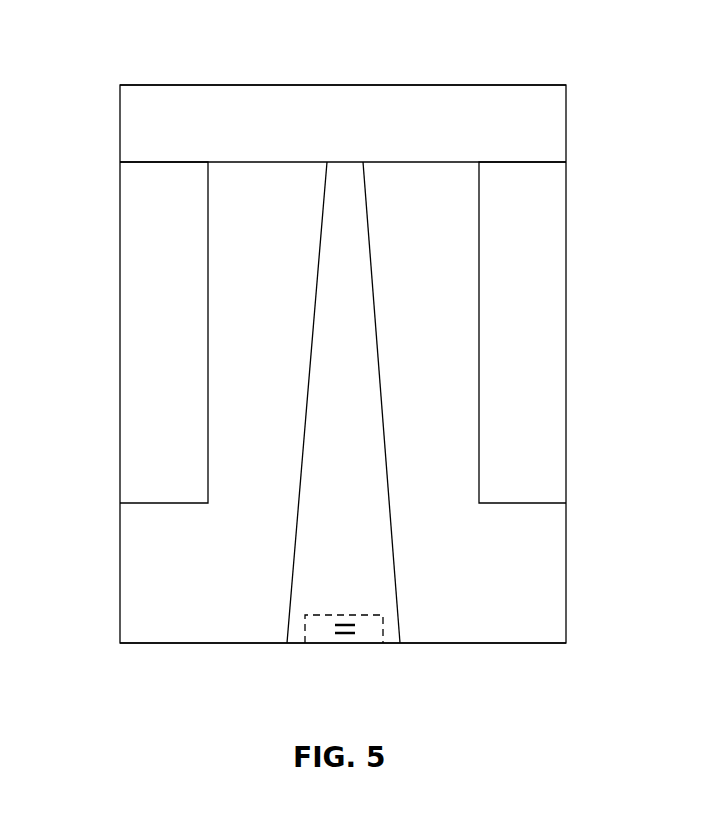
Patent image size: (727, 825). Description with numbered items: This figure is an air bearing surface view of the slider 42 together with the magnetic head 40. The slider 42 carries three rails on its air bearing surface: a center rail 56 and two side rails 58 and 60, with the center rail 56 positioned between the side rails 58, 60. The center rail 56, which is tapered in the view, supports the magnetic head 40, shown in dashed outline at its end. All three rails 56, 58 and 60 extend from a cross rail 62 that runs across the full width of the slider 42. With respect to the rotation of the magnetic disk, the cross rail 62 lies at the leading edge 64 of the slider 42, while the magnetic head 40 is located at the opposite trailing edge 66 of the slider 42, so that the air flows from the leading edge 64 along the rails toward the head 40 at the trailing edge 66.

The magnetic head 40 is at (324, 644).
The slider 42 is at (120, 593).
The center rail 56 is at (330, 275).
The side rail 58 is at (135, 242).
The side rail 60 is at (548, 243).
The cross rail 62 is at (264, 96).
The leading edge 64 is at (445, 85).
The trailing edge 66 is at (466, 644).